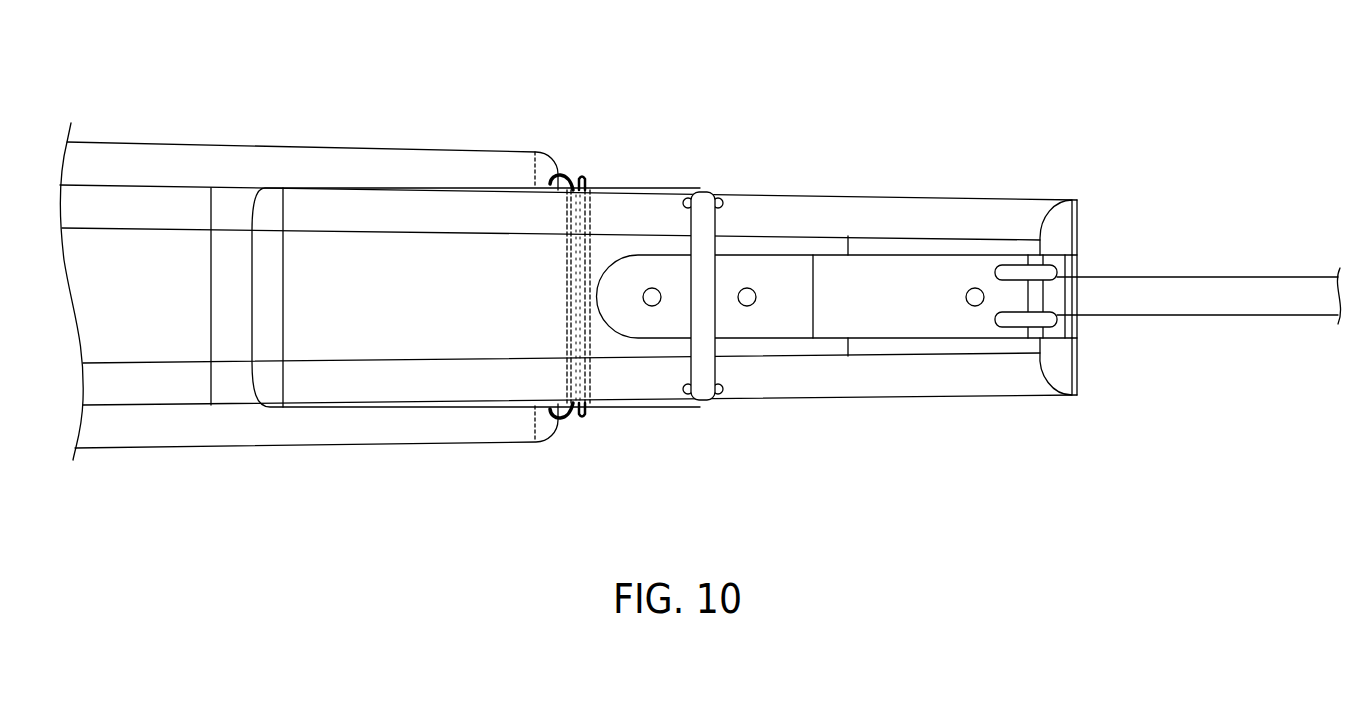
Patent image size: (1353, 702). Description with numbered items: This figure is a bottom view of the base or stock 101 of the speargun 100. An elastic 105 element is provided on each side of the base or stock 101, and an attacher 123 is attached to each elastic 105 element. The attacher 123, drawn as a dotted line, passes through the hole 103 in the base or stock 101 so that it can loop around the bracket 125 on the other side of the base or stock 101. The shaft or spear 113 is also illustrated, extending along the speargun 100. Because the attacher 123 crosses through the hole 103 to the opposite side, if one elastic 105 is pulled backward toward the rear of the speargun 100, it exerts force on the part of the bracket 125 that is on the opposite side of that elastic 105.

The speargun 100 is at (638, 73).
The base or stock 101 is at (345, 186).
The hole 103 is at (590, 348).
The elastic element 105 is at (447, 150).
The shaft or spear 113 is at (1168, 316).
The attacher 123 is at (573, 405).
The bracket 125 is at (700, 190).